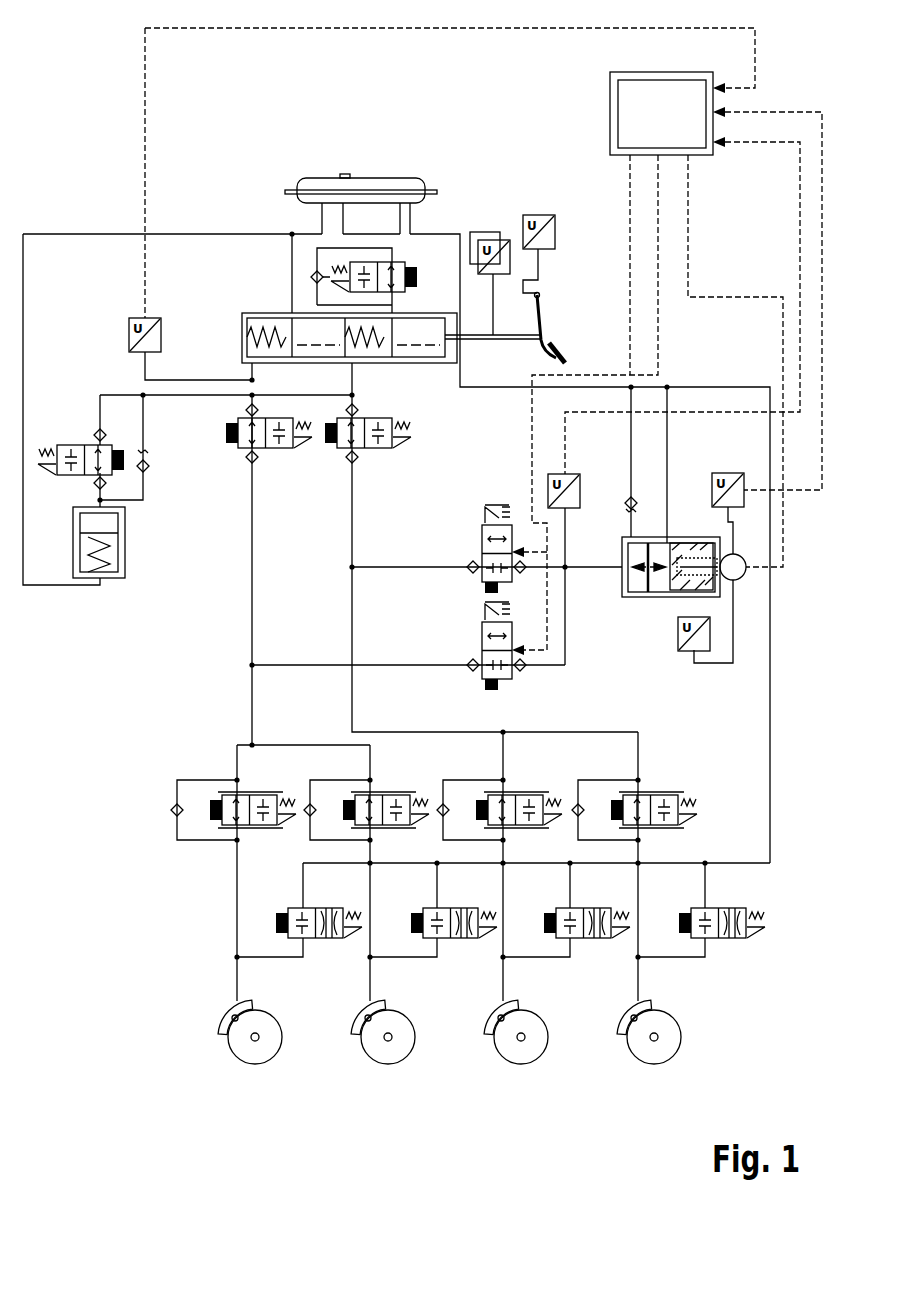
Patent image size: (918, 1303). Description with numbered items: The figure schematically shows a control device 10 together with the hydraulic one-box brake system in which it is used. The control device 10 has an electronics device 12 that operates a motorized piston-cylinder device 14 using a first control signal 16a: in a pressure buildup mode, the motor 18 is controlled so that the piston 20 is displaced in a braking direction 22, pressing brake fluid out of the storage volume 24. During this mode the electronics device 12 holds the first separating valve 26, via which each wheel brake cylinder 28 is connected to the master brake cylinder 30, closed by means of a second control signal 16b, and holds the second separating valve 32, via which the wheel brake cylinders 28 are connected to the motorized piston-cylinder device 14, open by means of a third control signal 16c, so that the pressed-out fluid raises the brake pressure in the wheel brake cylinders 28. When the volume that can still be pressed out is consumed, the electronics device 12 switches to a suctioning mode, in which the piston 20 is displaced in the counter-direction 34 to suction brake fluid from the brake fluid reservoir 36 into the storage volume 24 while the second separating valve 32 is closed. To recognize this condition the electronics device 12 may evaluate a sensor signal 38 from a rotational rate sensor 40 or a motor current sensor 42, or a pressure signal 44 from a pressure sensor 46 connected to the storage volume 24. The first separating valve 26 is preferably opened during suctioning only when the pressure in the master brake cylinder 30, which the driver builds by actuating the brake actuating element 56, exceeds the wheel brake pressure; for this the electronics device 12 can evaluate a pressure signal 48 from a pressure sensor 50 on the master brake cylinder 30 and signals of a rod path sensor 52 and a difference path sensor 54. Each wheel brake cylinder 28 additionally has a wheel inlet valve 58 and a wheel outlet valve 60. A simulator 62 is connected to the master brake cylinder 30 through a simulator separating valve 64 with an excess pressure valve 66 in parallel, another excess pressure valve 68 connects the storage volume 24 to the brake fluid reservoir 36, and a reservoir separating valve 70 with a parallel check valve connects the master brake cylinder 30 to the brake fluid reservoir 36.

The control device 10 is at (610, 86).
The electronics device 12 is at (706, 104).
The motorized piston-cylinder device 14 is at (655, 548).
The first control signal 16a is at (688, 217).
The second control signal 16b is at (630, 200).
The third control signal 16c is at (658, 320).
The motor 18 is at (740, 580).
The piston 20 is at (686, 547).
The braking direction 22 is at (648, 560).
The storage volume 24 is at (648, 591).
The first separating valve 26 is at (281, 448).
The wheel brake cylinder 28 is at (223, 1026).
The master brake cylinder 30 is at (244, 300).
The second separating valve 32 is at (482, 545).
The counter-direction 34 is at (667, 560).
The brake fluid reservoir 36 is at (389, 178).
The sensor signal 38 is at (780, 112).
The rotational rate sensor 40 is at (727, 474).
The motor current sensor 42 is at (686, 650).
The pressure signal 44 is at (770, 142).
The pressure sensor 46 is at (549, 474).
The pressure signal 48 is at (755, 38).
The pressure sensor 50 is at (129, 341).
The rod path sensor 52 is at (538, 215).
The difference path sensor 54 is at (492, 232).
The brake actuating element 56 is at (543, 301).
The wheel inlet valve 58 is at (275, 795).
The wheel outlet valve 60 is at (306, 908).
The simulator 62 is at (125, 535).
The simulator separating valve 64 is at (60, 445).
The excess pressure valve 66 is at (148, 460).
The excess pressure valve 68 is at (628, 511).
The reservoir separating valve 70 is at (400, 263).